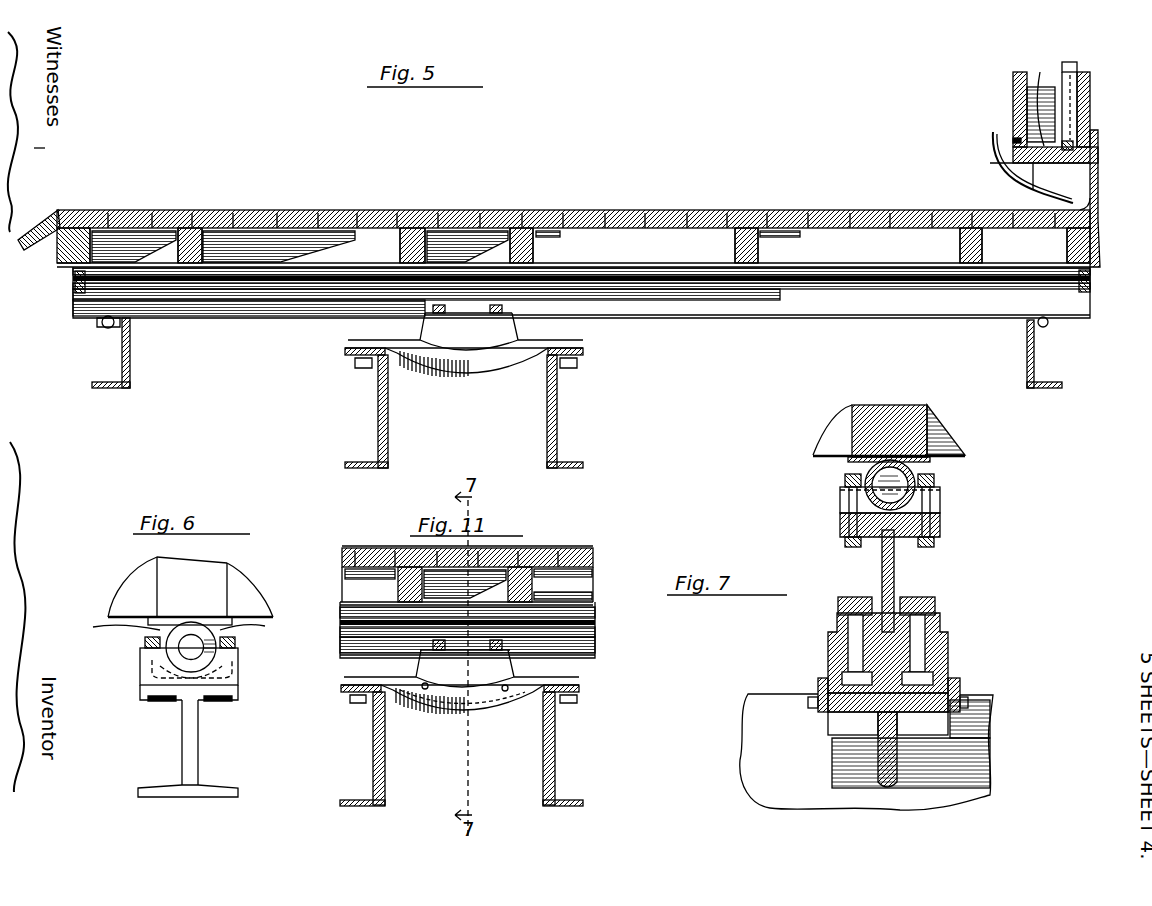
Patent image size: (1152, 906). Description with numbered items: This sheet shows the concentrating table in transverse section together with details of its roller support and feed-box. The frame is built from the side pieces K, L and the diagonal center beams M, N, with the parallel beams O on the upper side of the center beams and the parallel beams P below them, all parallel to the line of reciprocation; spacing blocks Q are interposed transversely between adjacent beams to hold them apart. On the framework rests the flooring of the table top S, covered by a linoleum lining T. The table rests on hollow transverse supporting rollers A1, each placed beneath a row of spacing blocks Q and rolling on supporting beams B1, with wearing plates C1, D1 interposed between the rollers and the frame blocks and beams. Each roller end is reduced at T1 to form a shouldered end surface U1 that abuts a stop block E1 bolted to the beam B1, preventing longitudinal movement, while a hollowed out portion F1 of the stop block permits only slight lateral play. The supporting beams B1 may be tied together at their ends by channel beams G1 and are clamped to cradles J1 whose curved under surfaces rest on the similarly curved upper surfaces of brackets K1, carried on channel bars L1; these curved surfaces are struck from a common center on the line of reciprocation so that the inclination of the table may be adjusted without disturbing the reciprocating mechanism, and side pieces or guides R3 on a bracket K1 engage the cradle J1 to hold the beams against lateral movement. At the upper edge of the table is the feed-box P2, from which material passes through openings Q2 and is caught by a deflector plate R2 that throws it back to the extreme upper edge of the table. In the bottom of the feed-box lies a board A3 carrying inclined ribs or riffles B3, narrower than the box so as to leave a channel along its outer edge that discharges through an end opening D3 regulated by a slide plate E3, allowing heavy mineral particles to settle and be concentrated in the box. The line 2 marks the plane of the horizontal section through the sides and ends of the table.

In FIG. 5, the linoleum lining T is at (565, 210).
In FIG. 11, the linoleum lining T is at (562, 557).
In FIG. 5, the side piece K is at (82, 240).
In FIG. 6, the side piece K is at (257, 590).
In FIG. 7, the side piece K is at (878, 746).
In FIG. 5, the parallel beams P is at (195, 232).
In FIG. 5, the center beam M is at (399, 248).
In FIG. 11, the center beam M is at (398, 582).
In FIG. 7, the center beam M is at (956, 438).
In FIG. 5, the center beam N is at (512, 248).
In FIG. 11, the center beam N is at (531, 584).
In FIG. 5, the parallel beams O is at (958, 248).
In FIG. 5, the side piece L is at (1066, 248).
In FIG. 5, the spacing blocks Q is at (692, 236).
In FIG. 6, the spacing blocks Q is at (210, 562).
In FIG. 11, the spacing blocks Q is at (594, 586).
In FIG. 7, the spacing blocks Q is at (899, 412).
In FIG. 5, the table top flooring S is at (718, 245).
In FIG. 11, the table top flooring S is at (598, 557).
In FIG. 5, the wearing plate C1 is at (310, 265).
In FIG. 6, the wearing plate C1 is at (180, 638).
In FIG. 11, the wearing plate C1 is at (342, 600).
In FIG. 7, the wearing plate C1 is at (850, 460).
In FIG. 5, the supporting roller A1 is at (248, 276).
In FIG. 6, the supporting roller A1 is at (236, 629).
In FIG. 7, the supporting roller A1 is at (905, 463).
In FIG. 5, the wearing plate D1 is at (293, 284).
In FIG. 6, the wearing plate D1 is at (228, 692).
In FIG. 11, the wearing plate D1 is at (352, 620).
In FIG. 7, the wearing plate D1 is at (846, 506).
In FIG. 5, the supporting beam B1 is at (753, 306).
In FIG. 6, the supporting beam B1 is at (189, 731).
In FIG. 11, the supporting beam B1 is at (594, 633).
In FIG. 7, the supporting beam B1 is at (897, 566).
In FIG. 5, the stop block E1 is at (72, 284).
In FIG. 6, the stop block E1 is at (232, 666).
In FIG. 7, the stop block E1 is at (941, 498).
In FIG. 5, the channel beam G1 is at (130, 352).
In FIG. 5, the cradle J1 is at (427, 327).
In FIG. 11, the cradle J1 is at (545, 666).
In FIG. 7, the cradle J1 is at (949, 653).
In FIG. 5, the bracket K1 is at (445, 362).
In FIG. 11, the bracket K1 is at (431, 706).
In FIG. 5, the channel bar L1 is at (378, 400).
In FIG. 11, the channel bar L1 is at (373, 750).
In FIG. 7, the channel bar L1 is at (774, 698).
In FIG. 5, the section line 2 is at (1101, 240).
In FIG. 5, the ribs or riffles B3 is at (1038, 72).
In FIG. 5, the slide plate E3 is at (1072, 68).
In FIG. 5, the feed-box P2 is at (1091, 84).
In FIG. 5, the opening D3 is at (1092, 122).
In FIG. 5, the openings Q2 is at (1013, 140).
In FIG. 5, the deflector plate R2 is at (993, 166).
In FIG. 5, the plate or board A3 is at (1053, 165).
In FIG. 6, the shouldered end surface U1 is at (158, 613).
In FIG. 6, the reduced roller end T1 is at (186, 648).
In FIG. 6, the hollowed out portion F1 is at (178, 663).
In FIG. 7, the hollowed out portion F1 is at (838, 490).
In FIG. 11, the side pieces or guides R3 is at (478, 691).
In FIG. 7, the side pieces or guides R3 is at (826, 682).